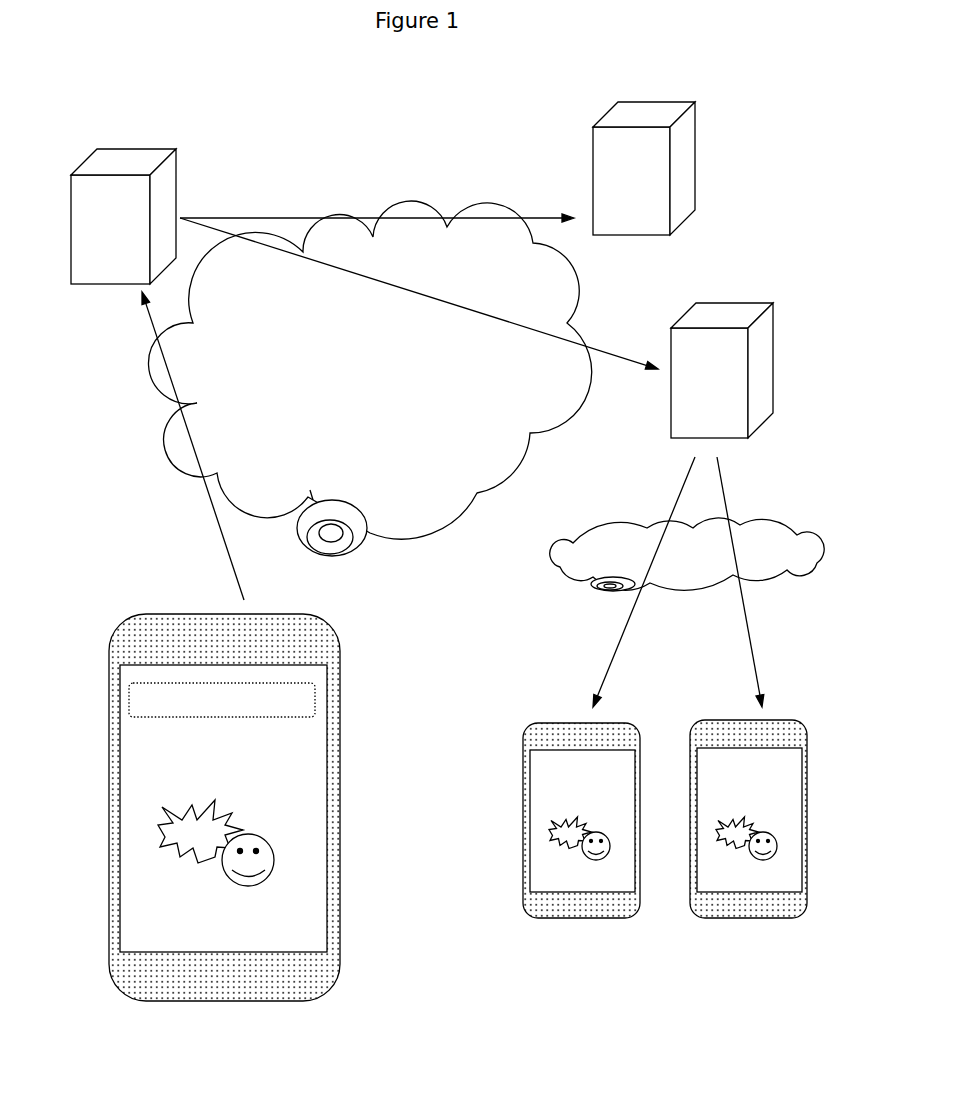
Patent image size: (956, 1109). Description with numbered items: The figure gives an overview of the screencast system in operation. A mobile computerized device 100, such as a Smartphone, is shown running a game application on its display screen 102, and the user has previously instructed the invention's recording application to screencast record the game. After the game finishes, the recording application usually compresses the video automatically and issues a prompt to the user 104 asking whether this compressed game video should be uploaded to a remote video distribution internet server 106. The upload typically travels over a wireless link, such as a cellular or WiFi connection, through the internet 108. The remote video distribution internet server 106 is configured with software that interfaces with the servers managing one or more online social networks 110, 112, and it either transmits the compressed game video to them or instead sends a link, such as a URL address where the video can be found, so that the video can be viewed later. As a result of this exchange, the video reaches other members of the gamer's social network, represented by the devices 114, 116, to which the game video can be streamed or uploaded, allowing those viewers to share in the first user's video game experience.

The mobile computerized device 100 is at (228, 807).
The display screen 102 is at (310, 883).
The user prompt 104 is at (148, 703).
The remote video distribution internet server 106 is at (182, 180).
The internet 108 is at (486, 396).
The online social network 110 is at (582, 157).
The online social network 112 is at (747, 297).
The social network member device 114 is at (527, 722).
The social network member device 116 is at (807, 717).